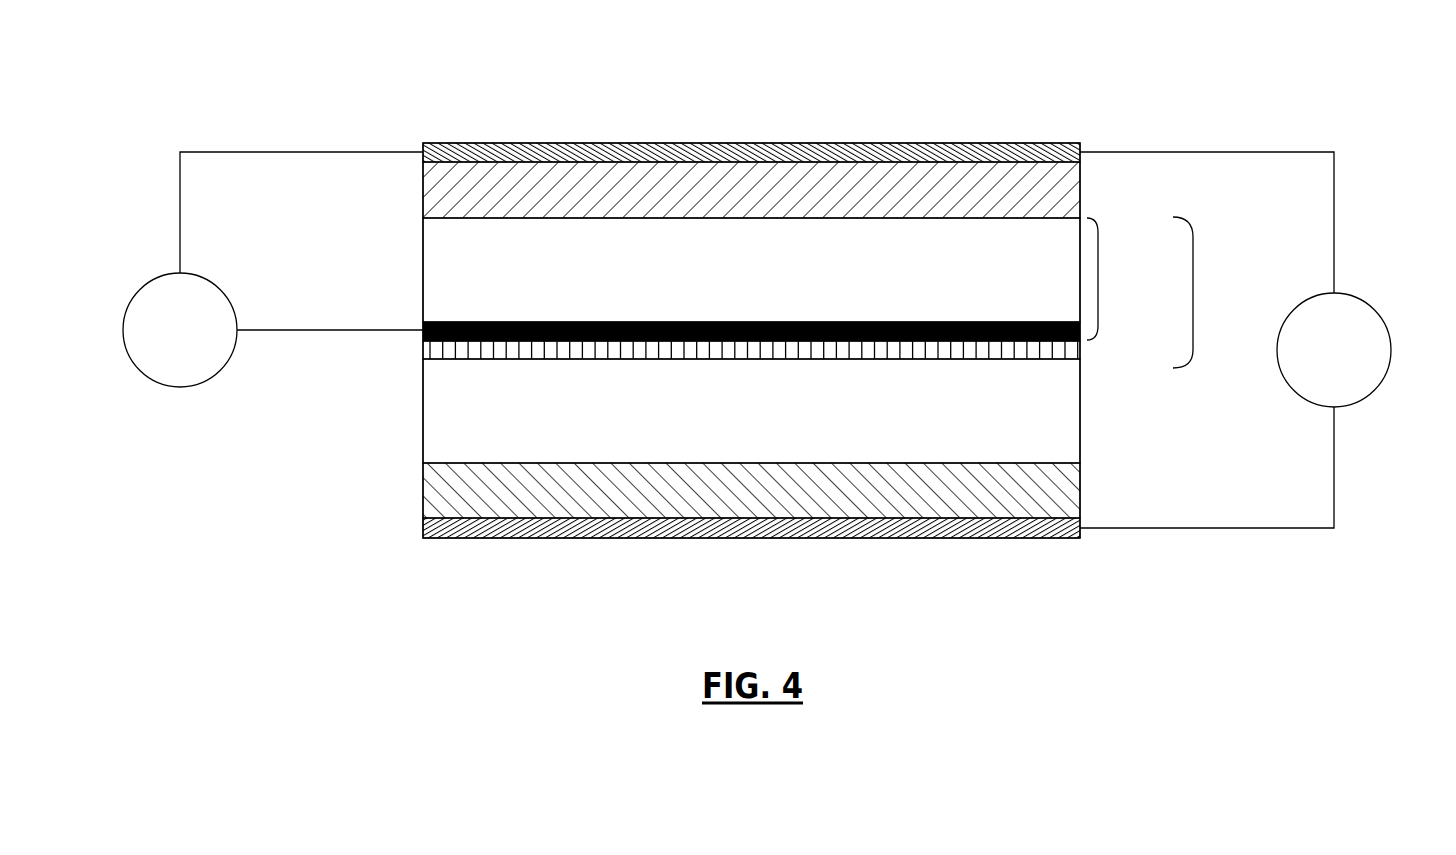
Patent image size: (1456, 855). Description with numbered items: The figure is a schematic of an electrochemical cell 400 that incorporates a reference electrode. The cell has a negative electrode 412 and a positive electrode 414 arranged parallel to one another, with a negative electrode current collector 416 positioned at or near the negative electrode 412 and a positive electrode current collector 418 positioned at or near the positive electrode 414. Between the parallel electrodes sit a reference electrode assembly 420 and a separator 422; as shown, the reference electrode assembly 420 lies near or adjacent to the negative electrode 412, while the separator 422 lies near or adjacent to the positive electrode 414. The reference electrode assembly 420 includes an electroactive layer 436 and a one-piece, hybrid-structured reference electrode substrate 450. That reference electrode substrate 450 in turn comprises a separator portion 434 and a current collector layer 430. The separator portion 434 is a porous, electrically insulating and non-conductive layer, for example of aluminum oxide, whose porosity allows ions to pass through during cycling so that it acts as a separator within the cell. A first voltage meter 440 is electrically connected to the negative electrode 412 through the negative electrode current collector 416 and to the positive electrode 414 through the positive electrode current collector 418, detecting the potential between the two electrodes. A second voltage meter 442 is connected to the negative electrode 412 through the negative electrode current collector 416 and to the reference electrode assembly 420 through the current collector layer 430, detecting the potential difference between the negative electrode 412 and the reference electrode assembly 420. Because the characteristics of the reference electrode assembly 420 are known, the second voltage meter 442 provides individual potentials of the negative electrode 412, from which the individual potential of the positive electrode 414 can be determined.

The electrochemical cell 400 is at (378, 43).
The negative electrode 412 is at (423, 186).
The positive electrode 414 is at (423, 490).
The negative electrode current collector 416 is at (750, 143).
The positive electrode current collector 418 is at (423, 528).
The reference electrode assembly 420 is at (1193, 291).
The separator 422 is at (423, 411).
The current collector layer 430 is at (750, 322).
The separator portion 434 is at (423, 268).
The electroactive layer 436 is at (423, 350).
The first voltage meter 440 is at (1374, 310).
The second voltage meter 442 is at (180, 387).
The reference electrode substrate 450 is at (1098, 279).